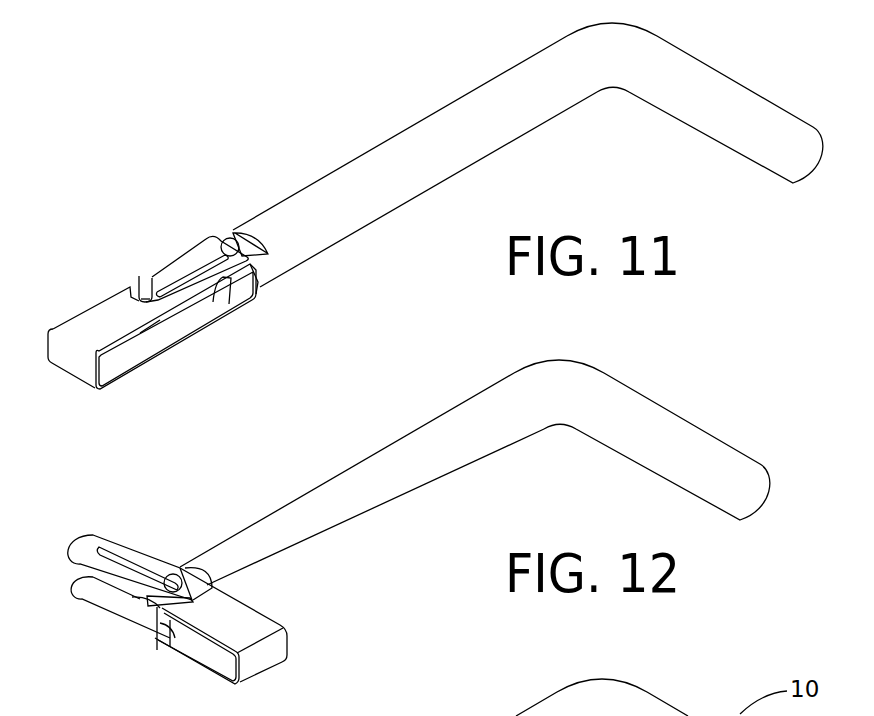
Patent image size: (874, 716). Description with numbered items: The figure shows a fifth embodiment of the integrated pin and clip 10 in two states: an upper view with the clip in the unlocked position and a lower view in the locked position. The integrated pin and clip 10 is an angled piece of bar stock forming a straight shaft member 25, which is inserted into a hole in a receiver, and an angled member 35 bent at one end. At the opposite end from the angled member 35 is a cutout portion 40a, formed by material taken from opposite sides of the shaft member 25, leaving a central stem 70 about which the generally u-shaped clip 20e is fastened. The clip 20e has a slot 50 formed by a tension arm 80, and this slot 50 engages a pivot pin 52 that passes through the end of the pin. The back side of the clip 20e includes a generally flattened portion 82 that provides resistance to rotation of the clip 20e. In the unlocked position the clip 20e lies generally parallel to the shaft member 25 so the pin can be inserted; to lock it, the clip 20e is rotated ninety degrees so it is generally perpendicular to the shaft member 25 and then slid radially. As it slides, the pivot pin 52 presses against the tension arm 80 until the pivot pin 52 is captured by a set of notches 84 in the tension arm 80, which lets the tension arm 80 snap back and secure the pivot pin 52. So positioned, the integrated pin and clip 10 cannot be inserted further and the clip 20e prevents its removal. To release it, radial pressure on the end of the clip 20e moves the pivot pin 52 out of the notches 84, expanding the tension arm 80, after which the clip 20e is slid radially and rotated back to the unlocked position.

In FIG. 11, the integrated pin and clip 10 is at (532, 151).
In FIG. 12, the integrated pin and clip 10 is at (478, 468).
In FIG. 11, the shaft member 25 is at (458, 160).
In FIG. 12, the shaft member 25 is at (405, 497).
In FIG. 11, the angled member 35 is at (735, 143).
In FIG. 12, the angled member 35 is at (640, 460).
In FIG. 11, the clip 20e is at (70, 362).
In FIG. 12, the clip 20e is at (260, 660).
In FIG. 11, the cutout portion 40a is at (268, 257).
In FIG. 11, the slot 50 is at (193, 267).
In FIG. 12, the slot 50 is at (127, 557).
In FIG. 11, the pivot pin 52 is at (228, 240).
In FIG. 12, the pivot pin 52 is at (171, 574).
In FIG. 11, the flattened portion 82 is at (248, 232).
In FIG. 12, the flattened portion 82 is at (87, 540).
In FIG. 11, the notches 84 is at (153, 292).
In FIG. 12, the notches 84 is at (143, 600).
In FIG. 12, the tension arm 80 is at (100, 566).
In FIG. 12, the central stem 70 is at (163, 630).